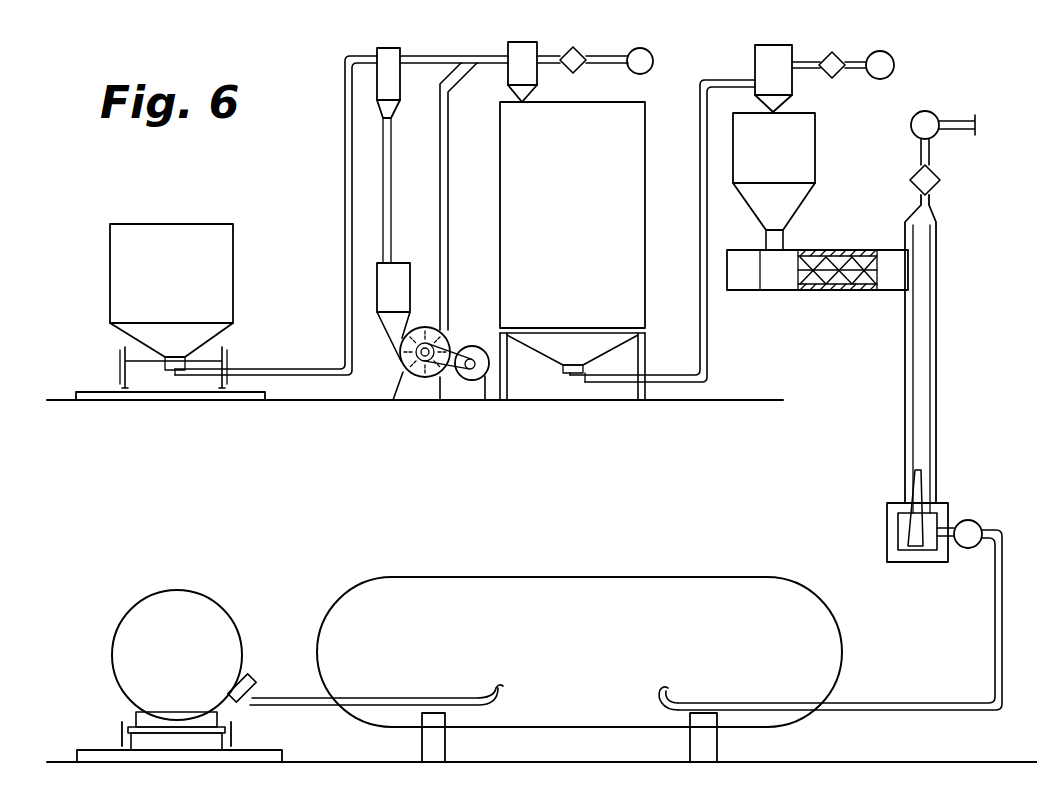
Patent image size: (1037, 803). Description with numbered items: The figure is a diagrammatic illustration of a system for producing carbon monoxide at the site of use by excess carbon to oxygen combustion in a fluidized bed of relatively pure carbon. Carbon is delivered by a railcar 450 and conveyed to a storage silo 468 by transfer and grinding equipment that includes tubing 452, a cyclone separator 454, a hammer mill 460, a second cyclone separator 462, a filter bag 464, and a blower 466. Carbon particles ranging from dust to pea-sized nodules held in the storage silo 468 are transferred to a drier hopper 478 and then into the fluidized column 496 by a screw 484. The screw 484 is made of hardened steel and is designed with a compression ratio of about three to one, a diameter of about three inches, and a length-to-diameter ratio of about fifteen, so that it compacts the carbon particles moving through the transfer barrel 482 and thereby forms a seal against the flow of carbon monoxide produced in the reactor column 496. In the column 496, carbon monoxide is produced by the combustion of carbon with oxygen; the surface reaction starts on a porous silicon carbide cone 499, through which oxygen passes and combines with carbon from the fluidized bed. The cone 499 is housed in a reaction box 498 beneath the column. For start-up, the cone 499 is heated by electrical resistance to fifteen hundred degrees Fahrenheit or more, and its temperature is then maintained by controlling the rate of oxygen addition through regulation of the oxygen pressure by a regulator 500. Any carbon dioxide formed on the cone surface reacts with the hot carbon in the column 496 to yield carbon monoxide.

The railcar 450 is at (188, 224).
The tubing 452 is at (345, 243).
The cyclone separator 454 is at (400, 82).
The hammer mill 460 is at (441, 322).
The cyclone separator 462 is at (537, 62).
The filter bag 464 is at (579, 72).
The blower 466 is at (653, 60).
The storage silo 468 is at (645, 213).
The drier hopper 478 is at (815, 150).
The transfer barrel 482 is at (780, 276).
The screw 484 is at (830, 292).
The fluidized column 496 is at (925, 388).
The reaction box 498 is at (940, 514).
The porous silicon carbide cone 499 is at (916, 533).
The regulator 500 is at (968, 548).